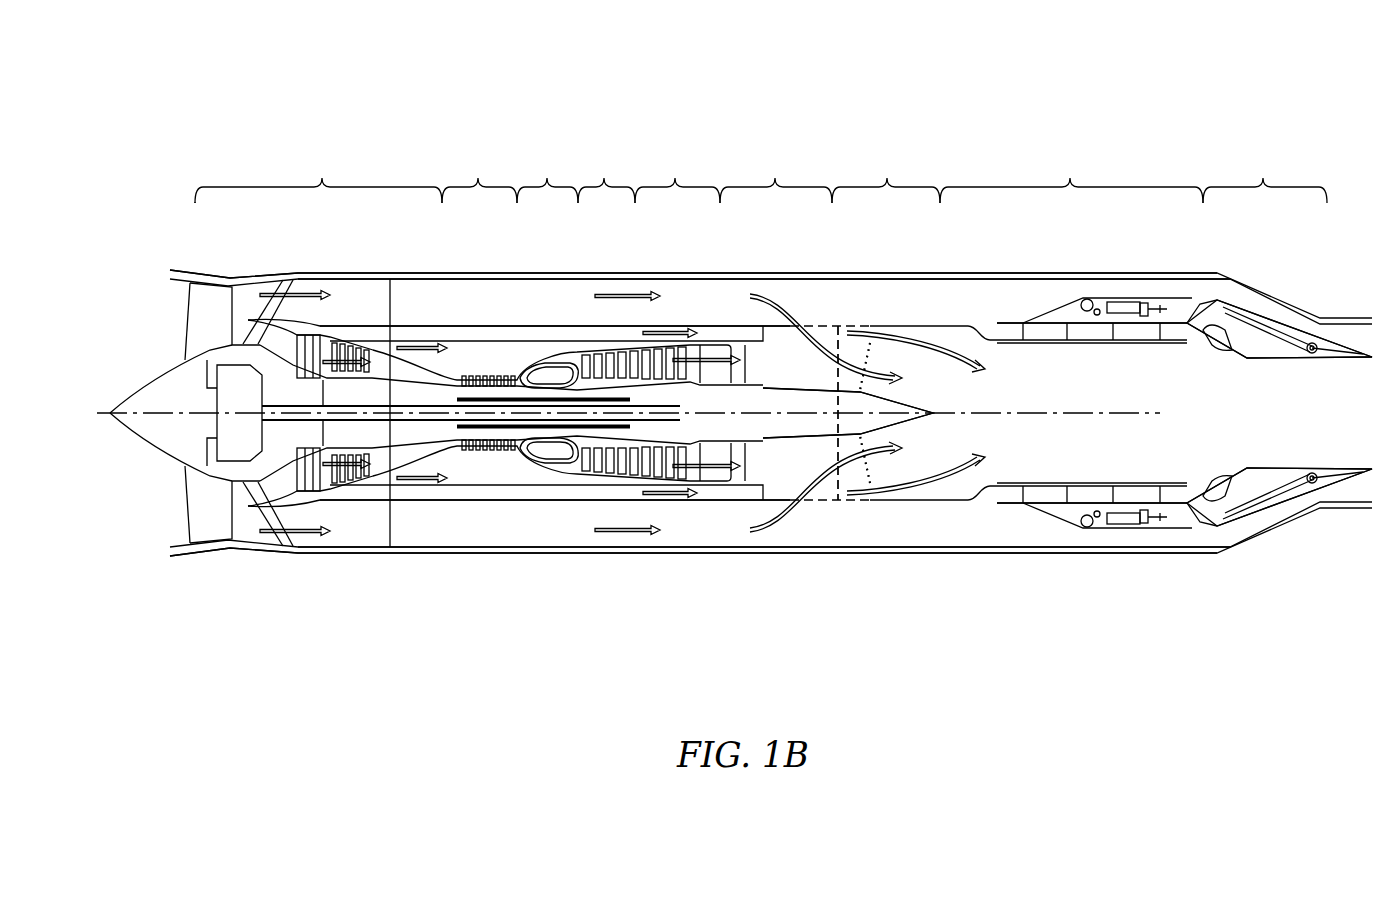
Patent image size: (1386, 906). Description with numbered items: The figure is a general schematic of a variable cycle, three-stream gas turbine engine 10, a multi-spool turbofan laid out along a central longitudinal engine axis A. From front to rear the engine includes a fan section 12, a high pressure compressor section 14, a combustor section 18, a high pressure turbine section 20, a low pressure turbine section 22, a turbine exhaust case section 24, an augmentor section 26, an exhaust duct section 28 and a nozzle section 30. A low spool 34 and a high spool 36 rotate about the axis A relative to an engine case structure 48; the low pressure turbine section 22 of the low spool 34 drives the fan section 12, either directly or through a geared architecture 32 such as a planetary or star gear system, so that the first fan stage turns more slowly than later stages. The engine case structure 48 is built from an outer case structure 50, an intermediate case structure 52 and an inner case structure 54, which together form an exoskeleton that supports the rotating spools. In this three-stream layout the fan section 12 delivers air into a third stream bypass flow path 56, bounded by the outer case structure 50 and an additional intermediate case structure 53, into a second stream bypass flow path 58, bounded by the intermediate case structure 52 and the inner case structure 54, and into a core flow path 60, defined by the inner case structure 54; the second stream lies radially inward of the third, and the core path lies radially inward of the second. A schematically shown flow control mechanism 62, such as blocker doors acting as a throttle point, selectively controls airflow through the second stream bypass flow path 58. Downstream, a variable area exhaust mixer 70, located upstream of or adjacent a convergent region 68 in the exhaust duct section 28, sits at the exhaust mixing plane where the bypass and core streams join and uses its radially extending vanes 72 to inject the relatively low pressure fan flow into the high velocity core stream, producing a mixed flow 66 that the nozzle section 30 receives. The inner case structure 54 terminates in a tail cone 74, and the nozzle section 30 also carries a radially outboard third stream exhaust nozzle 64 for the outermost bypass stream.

The gas turbine engine 10 is at (1048, 121).
The fan section 12 is at (263, 174).
The high pressure compressor section 14 is at (478, 169).
The combustor section 18 is at (547, 169).
The high pressure turbine section 20 is at (604, 169).
The low pressure turbine section 22 is at (677, 164).
The turbine exhaust case section 24 is at (778, 164).
The augmentor section 26 is at (887, 169).
The exhaust duct section 28 is at (1070, 164).
The nozzle section 30 is at (1265, 164).
The central longitudinal engine axis A is at (98, 410).
The geared architecture 32 is at (250, 391).
The low spool 34 is at (277, 430).
The high spool 36 is at (498, 430).
The engine case structure 48 is at (407, 556).
The outer case structure 50 is at (540, 554).
The intermediate case structure 52 is at (727, 327).
The additional intermediate case structure 53 is at (745, 324).
The inner case structure 54 is at (513, 460).
The third stream bypass flow path 56 is at (470, 309).
The second stream bypass flow path 58 is at (623, 340).
The core flow path 60 is at (497, 377).
The flow control mechanism 62 is at (983, 334).
The third stream exhaust nozzle 64 is at (1283, 310).
The mixed flow 66 is at (1038, 400).
The convergent region 68 is at (1190, 392).
The variable area exhaust mixer 70 is at (827, 352).
The vanes 72 is at (867, 355).
The tail cone 74 is at (900, 420).